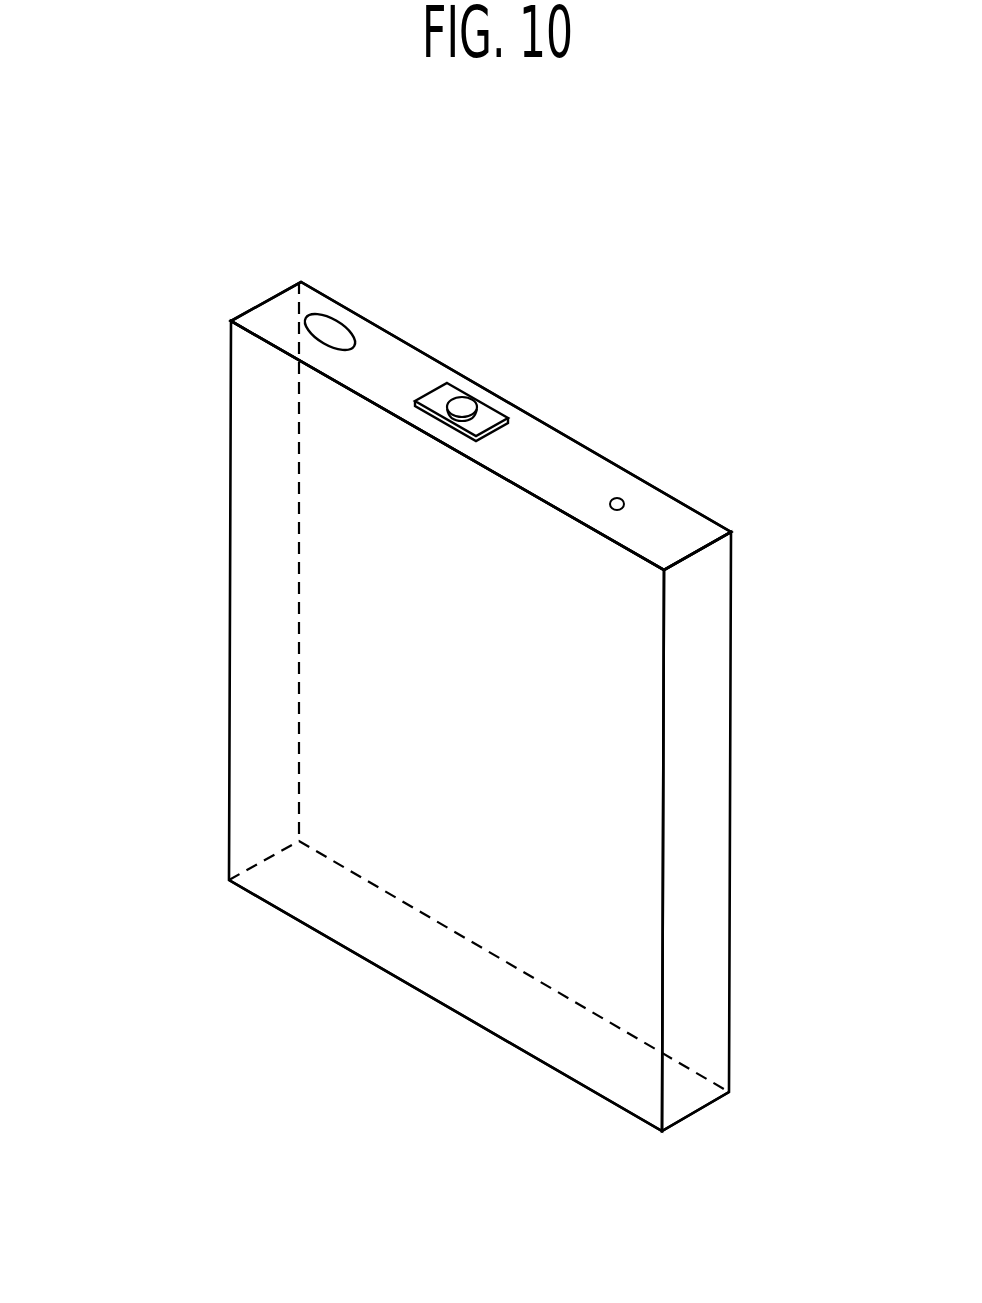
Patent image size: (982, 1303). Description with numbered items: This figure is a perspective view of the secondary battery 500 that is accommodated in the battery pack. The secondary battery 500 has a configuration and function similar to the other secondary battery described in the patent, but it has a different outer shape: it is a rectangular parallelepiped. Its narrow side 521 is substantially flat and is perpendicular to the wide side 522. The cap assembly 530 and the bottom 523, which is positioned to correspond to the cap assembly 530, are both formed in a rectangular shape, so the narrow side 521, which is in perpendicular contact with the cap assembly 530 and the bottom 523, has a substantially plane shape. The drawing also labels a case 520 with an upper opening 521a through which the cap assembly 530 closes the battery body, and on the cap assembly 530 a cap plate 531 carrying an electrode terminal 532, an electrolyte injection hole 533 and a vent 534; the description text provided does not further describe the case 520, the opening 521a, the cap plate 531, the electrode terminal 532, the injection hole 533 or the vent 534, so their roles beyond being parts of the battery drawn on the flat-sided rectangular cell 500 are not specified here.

The secondary battery 500 is at (760, 258).
The case 520 is at (212, 578).
The narrow side 521 is at (713, 815).
The opening of case 521a is at (268, 302).
The wide side 522 is at (343, 770).
The bottom 523 is at (490, 1002).
The cap assembly 530 is at (740, 407).
The cap plate 531 is at (527, 450).
The electrode terminal 532 is at (465, 400).
The electrolyte injection hole 533 is at (617, 497).
The vent 534 is at (333, 332).